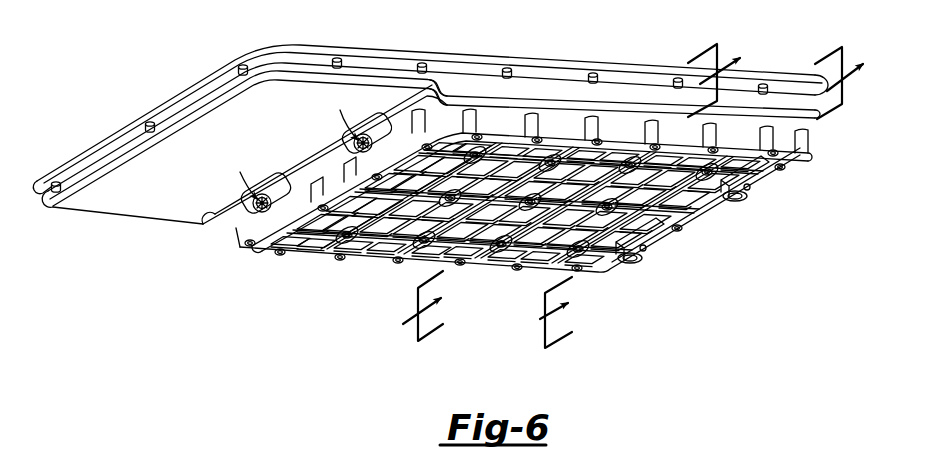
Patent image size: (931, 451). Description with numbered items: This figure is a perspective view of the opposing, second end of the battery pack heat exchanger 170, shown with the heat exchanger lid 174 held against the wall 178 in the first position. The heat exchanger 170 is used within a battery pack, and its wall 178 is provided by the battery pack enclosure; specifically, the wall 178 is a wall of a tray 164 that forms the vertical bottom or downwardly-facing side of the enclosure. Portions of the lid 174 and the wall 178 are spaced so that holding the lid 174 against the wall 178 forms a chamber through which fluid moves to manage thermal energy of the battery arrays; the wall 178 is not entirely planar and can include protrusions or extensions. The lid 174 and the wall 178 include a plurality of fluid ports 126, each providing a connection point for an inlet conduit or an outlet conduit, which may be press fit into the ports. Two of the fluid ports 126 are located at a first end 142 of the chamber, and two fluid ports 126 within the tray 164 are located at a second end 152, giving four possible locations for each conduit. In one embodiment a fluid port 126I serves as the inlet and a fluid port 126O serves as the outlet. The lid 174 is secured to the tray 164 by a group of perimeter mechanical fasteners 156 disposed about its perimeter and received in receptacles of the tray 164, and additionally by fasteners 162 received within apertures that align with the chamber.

The heat exchanger 170 is at (217, 298).
The tray 164 is at (575, 62).
The wall 178 is at (453, 107).
The second end 152 is at (286, 157).
The fluid ports 126 is at (357, 140).
The fluid port 126I is at (632, 259).
The fluid port 126O is at (728, 196).
The first end 142 is at (817, 182).
The heat exchanger lid 174 is at (313, 257).
The fasteners 162 is at (348, 240).
The perimeter mechanical fasteners 156 is at (282, 258).